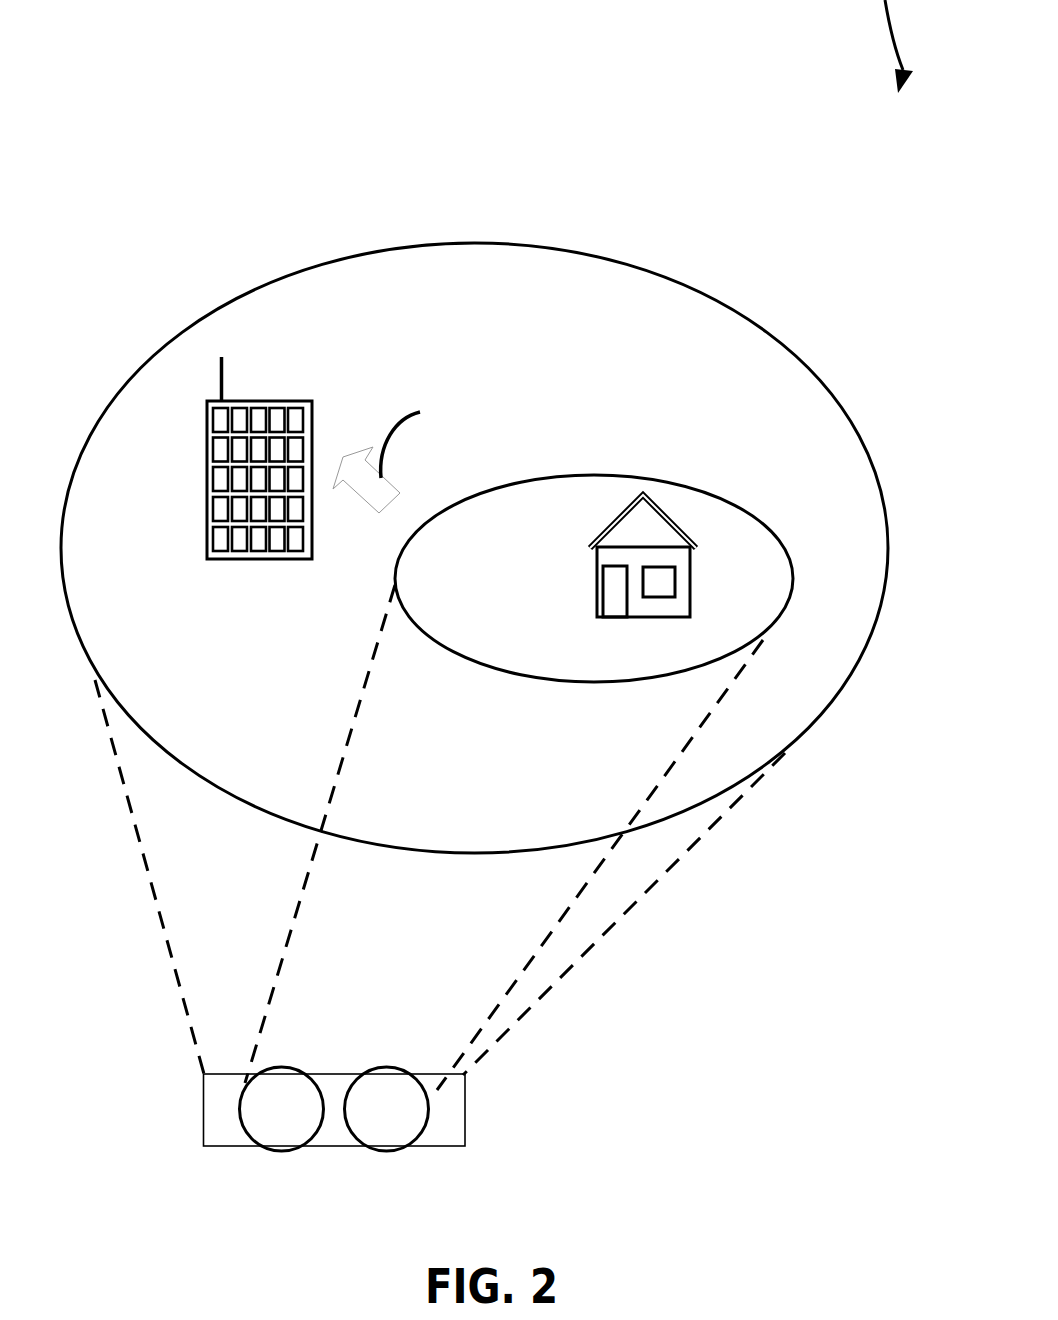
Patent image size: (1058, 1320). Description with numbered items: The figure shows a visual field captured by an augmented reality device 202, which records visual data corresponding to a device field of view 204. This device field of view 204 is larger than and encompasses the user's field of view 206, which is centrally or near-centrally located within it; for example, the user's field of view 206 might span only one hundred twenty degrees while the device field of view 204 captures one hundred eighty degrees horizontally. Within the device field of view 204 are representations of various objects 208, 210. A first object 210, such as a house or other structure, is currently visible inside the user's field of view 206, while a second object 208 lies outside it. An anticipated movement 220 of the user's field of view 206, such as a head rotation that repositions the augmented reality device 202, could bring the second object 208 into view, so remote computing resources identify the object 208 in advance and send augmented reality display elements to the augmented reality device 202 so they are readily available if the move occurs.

The augmented reality device 202 is at (335, 1157).
The device field of view 204 is at (340, 258).
The user's field of view 206 is at (693, 488).
The object 208 is at (268, 646).
The object 210 is at (543, 640).
The anticipated movement 220 is at (522, 454).